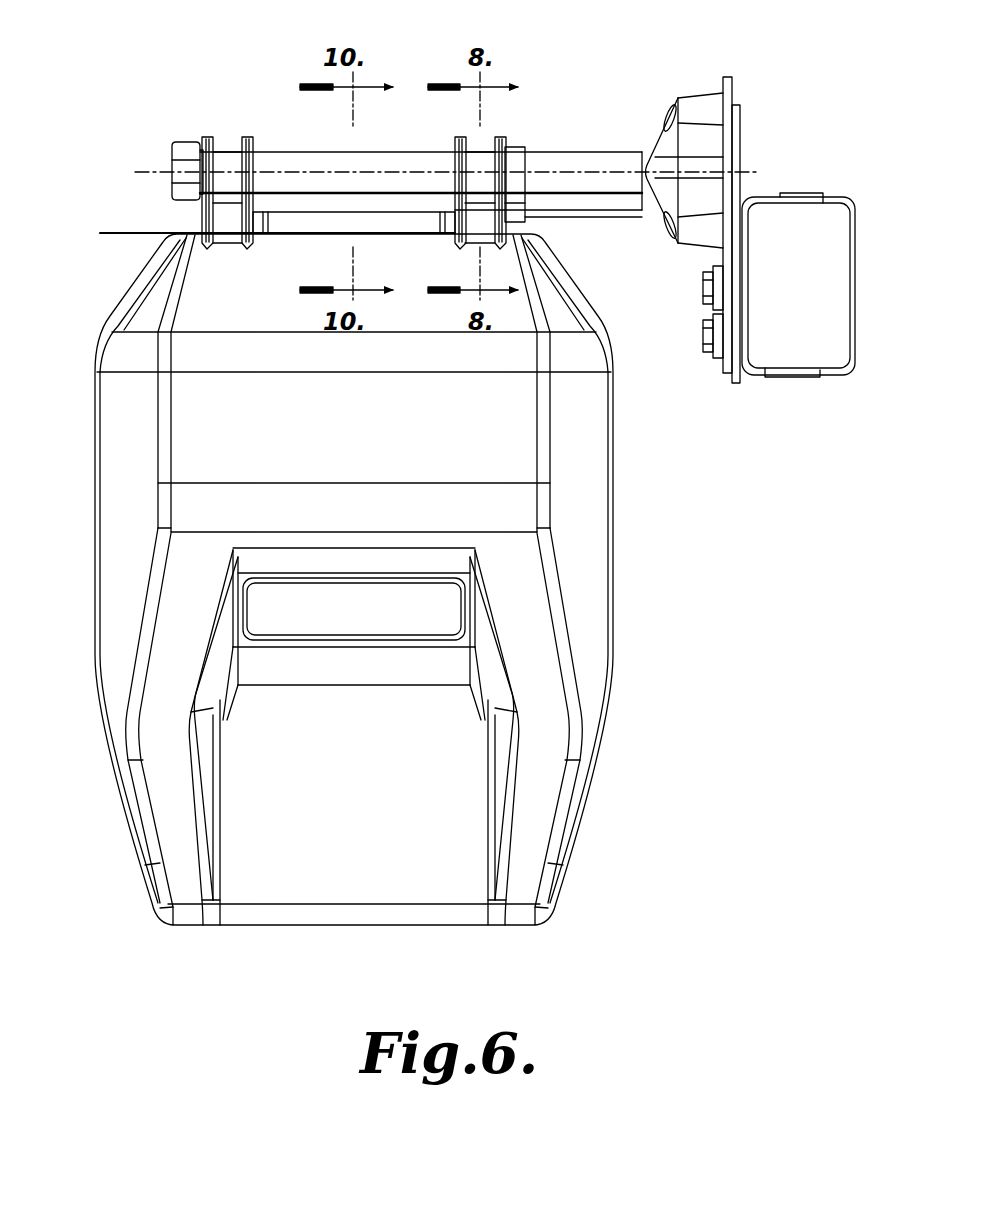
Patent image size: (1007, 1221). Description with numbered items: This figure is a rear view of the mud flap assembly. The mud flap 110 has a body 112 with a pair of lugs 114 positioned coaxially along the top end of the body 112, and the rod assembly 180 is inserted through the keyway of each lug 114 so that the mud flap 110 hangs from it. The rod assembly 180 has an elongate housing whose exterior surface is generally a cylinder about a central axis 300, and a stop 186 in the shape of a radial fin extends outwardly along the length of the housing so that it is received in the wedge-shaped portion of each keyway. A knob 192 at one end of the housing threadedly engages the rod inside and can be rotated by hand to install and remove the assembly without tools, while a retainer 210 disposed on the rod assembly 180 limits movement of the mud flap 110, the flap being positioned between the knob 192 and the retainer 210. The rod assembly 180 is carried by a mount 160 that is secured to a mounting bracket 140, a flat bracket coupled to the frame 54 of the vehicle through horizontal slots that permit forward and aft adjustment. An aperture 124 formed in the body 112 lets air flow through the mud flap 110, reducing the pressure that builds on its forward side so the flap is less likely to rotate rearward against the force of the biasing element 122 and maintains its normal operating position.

The frame 54 is at (768, 200).
The mud flap 110 is at (93, 562).
The body 112 is at (493, 425).
The lugs 114 is at (230, 150).
The biasing element 122 is at (313, 220).
The aperture 124 is at (273, 640).
The mounting bracket 140 is at (732, 90).
The mount 160 is at (687, 100).
The rod assembly 180 is at (583, 150).
The stop 186 is at (600, 212).
The knob 192 is at (173, 150).
The retainer 210 is at (522, 142).
The central axis 300 is at (150, 173).